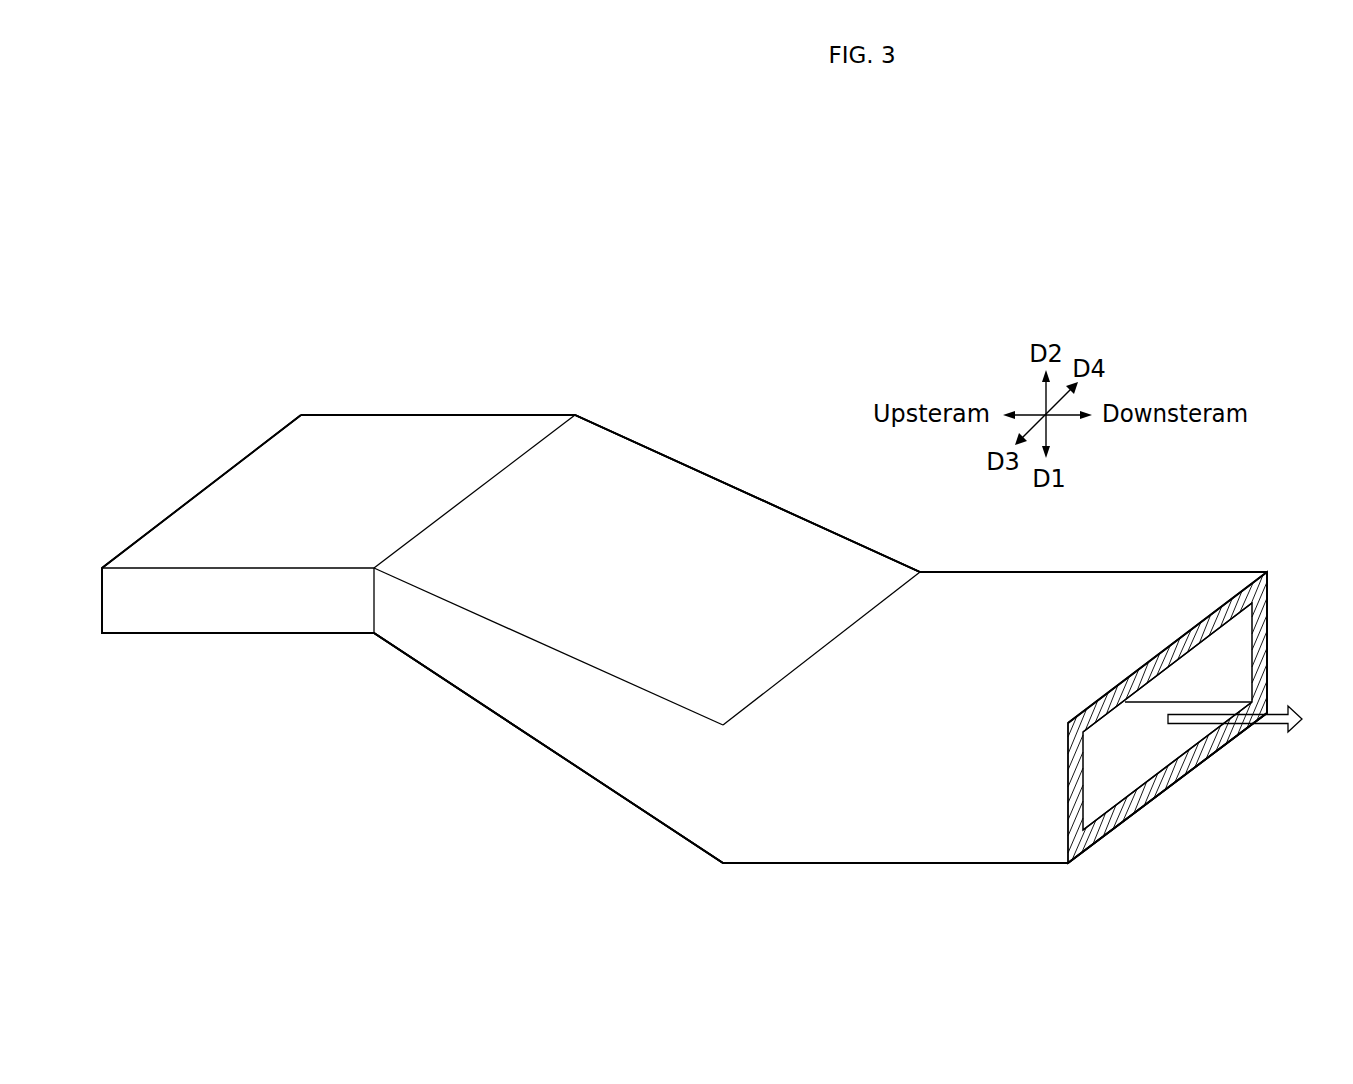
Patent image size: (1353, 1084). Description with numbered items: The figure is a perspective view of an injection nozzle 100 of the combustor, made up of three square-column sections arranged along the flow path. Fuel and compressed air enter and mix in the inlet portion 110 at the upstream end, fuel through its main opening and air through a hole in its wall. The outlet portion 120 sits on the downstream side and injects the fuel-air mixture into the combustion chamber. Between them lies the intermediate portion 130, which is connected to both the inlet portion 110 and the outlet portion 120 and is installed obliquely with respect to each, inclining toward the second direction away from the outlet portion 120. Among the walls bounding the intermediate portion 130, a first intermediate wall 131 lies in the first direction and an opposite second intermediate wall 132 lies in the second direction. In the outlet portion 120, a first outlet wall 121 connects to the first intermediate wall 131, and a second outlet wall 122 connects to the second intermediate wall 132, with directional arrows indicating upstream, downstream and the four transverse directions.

The injection nozzle 100 is at (191, 345).
The inlet portion 110 is at (219, 668).
The outlet portion 120 is at (917, 877).
The first outlet wall 121 is at (1153, 800).
The second outlet wall 122 is at (1230, 601).
The intermediate portion 130 is at (575, 801).
The first intermediate wall 131 is at (513, 728).
The second intermediate wall 132 is at (755, 505).